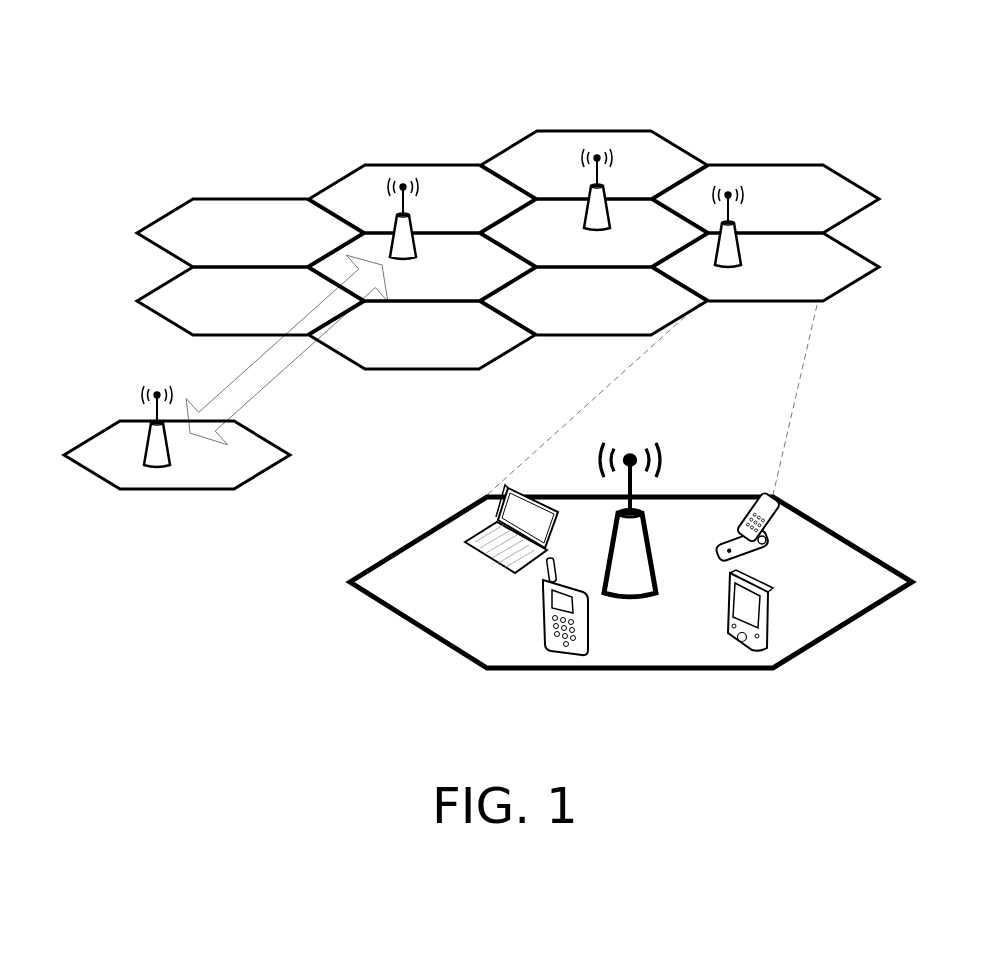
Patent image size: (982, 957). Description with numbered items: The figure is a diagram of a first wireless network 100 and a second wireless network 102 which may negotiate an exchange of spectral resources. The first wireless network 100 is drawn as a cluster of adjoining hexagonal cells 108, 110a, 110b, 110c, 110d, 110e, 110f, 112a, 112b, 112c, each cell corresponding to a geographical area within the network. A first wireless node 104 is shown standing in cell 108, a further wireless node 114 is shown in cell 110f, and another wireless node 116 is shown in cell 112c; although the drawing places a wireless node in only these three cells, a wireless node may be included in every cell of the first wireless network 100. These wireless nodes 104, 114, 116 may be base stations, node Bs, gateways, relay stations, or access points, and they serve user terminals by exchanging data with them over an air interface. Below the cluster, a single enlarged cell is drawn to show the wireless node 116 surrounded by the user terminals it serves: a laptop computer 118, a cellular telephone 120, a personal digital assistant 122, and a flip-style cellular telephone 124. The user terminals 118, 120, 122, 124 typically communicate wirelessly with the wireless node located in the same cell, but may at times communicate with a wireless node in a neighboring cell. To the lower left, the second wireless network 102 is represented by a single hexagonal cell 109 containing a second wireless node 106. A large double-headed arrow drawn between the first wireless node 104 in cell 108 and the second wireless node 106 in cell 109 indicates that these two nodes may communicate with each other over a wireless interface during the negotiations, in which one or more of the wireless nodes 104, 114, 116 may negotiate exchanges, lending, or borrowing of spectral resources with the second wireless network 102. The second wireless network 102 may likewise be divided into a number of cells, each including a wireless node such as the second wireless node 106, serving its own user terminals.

The first wireless network 100 is at (277, 148).
The second wireless network 102 is at (130, 515).
The first wireless node 104 is at (417, 240).
The second wireless node 106 is at (170, 437).
The cell 108 is at (422, 267).
The cell 109 is at (177, 455).
The cell 110a is at (422, 199).
The cell 110b is at (250, 233).
The cell 110c is at (250, 301).
The cell 110d is at (422, 335).
The cell 110e is at (594, 301).
The cell 110f is at (594, 233).
The cell 112a is at (594, 165).
The cell 112b is at (766, 199).
The cell 112c is at (766, 267).
The wireless node 114 is at (612, 205).
The wireless node 116 is at (742, 240).
The user terminal 118 is at (467, 540).
The user terminal 120 is at (540, 598).
The user terminal 122 is at (725, 610).
The user terminal 124 is at (778, 523).